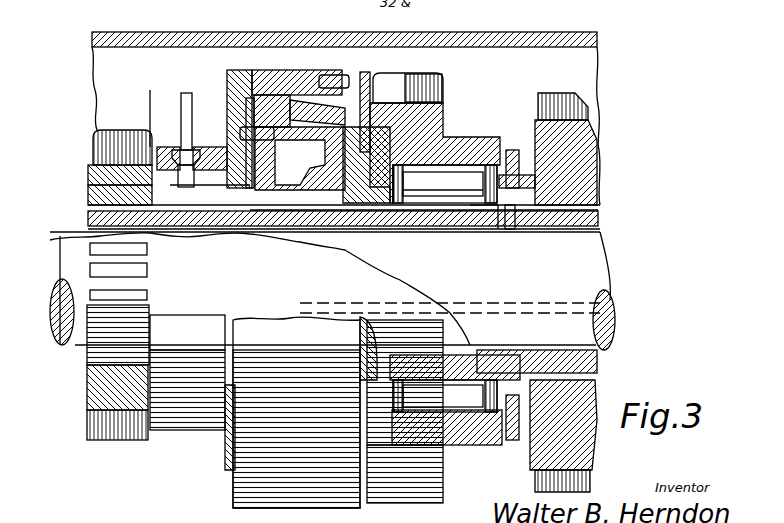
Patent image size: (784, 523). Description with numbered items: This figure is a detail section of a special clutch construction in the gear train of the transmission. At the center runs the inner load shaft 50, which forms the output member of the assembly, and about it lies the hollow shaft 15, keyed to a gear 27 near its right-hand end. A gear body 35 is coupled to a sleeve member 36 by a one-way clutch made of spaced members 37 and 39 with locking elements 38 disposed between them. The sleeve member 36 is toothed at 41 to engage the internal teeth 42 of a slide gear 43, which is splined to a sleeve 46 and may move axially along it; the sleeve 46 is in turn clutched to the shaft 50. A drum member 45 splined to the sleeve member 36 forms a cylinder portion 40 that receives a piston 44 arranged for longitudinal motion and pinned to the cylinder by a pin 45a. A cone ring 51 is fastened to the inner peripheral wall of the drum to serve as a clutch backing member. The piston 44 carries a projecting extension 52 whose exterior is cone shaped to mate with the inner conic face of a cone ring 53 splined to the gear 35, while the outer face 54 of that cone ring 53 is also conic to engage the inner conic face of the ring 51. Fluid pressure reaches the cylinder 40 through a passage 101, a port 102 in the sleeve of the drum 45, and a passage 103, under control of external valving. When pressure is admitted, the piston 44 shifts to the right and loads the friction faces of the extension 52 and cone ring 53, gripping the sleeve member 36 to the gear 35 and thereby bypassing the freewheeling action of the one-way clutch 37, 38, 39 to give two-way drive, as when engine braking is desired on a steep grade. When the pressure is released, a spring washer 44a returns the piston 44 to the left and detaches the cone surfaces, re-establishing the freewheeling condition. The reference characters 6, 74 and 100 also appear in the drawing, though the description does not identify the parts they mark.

The housing 6 is at (347, 48).
The hollow shaft 15 is at (90, 218).
The gear 27 is at (110, 147).
The gear body 35 is at (432, 103).
The sleeve member 36 is at (418, 222).
The spaced member 37 is at (440, 165).
The locking elements 38 is at (485, 165).
The spaced member 39 is at (478, 205).
The cylinder portion 40 is at (248, 102).
The teeth 41 is at (501, 205).
The internal teeth 42 is at (512, 150).
The slide gear 43 is at (572, 110).
The piston 44 is at (254, 112).
The spring washer 44a is at (280, 70).
The drum member 45 is at (228, 80).
The pin 45a is at (240, 133).
The sleeve 46 is at (598, 220).
The inner load shaft 50 is at (590, 250).
The cone ring 51 is at (308, 75).
The projecting extension 52 is at (372, 104).
The cone ring 53 is at (320, 145).
The outer face 54 is at (364, 82).
The shaft end 74 is at (604, 300).
The housing wall 100 is at (597, 130).
The passage 101 is at (185, 110).
The port 102 is at (90, 185).
The passage 103 is at (216, 185).